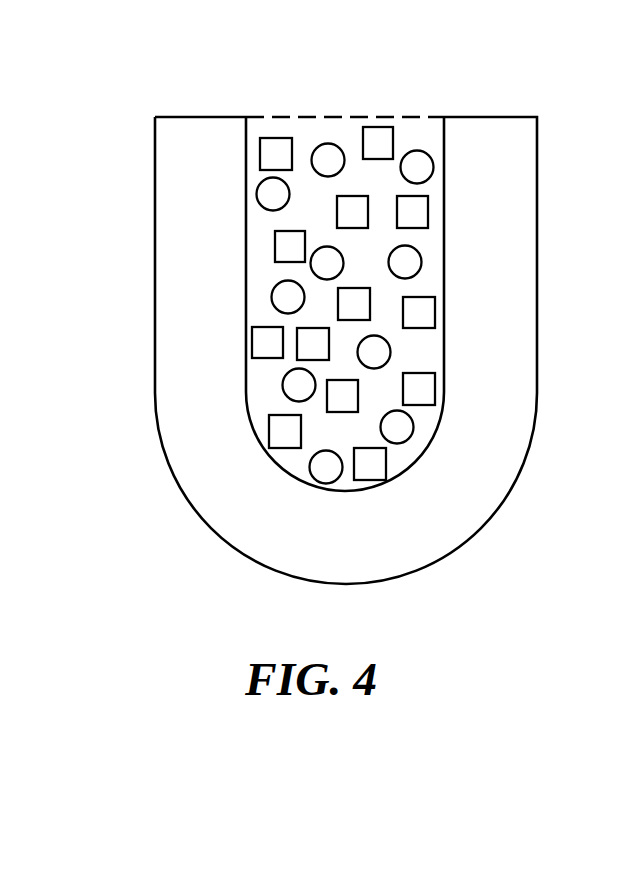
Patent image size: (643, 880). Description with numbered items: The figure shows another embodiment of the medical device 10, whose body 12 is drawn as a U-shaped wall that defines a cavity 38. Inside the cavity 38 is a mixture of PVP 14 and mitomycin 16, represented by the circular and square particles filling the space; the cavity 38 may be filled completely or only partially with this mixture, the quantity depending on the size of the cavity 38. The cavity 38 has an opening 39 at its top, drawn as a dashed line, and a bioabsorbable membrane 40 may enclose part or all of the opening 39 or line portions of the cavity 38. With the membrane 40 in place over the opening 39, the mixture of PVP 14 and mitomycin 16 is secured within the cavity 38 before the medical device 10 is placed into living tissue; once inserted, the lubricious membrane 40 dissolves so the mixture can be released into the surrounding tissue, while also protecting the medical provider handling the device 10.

The medical device 10 is at (567, 305).
The body 12 is at (182, 498).
The PVP 14 is at (288, 297).
The mitomycin 16 is at (258, 340).
The cavity 38 is at (263, 388).
The opening 39 is at (308, 130).
The bioabsorbable membrane 40 is at (403, 115).